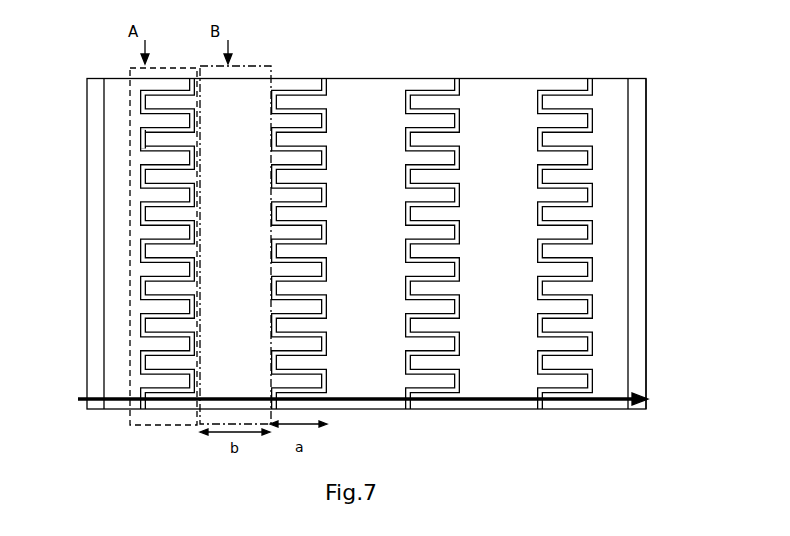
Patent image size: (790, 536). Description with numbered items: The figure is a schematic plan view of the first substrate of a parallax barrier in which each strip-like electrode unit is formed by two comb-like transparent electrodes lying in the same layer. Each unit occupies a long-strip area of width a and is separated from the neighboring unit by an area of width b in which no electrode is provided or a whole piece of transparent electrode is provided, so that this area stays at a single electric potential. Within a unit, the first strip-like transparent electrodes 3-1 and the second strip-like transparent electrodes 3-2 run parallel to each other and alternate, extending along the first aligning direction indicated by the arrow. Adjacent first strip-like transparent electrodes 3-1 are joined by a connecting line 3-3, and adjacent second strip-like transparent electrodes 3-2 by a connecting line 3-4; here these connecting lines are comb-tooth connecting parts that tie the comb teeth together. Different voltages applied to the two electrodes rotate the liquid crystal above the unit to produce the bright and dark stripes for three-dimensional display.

The first strip-like transparent electrode 3-1 is at (138, 100).
The second strip-like transparent electrode 3-2 is at (143, 157).
The connecting line 3-3 is at (614, 90).
The connecting line 3-4 is at (499, 98).